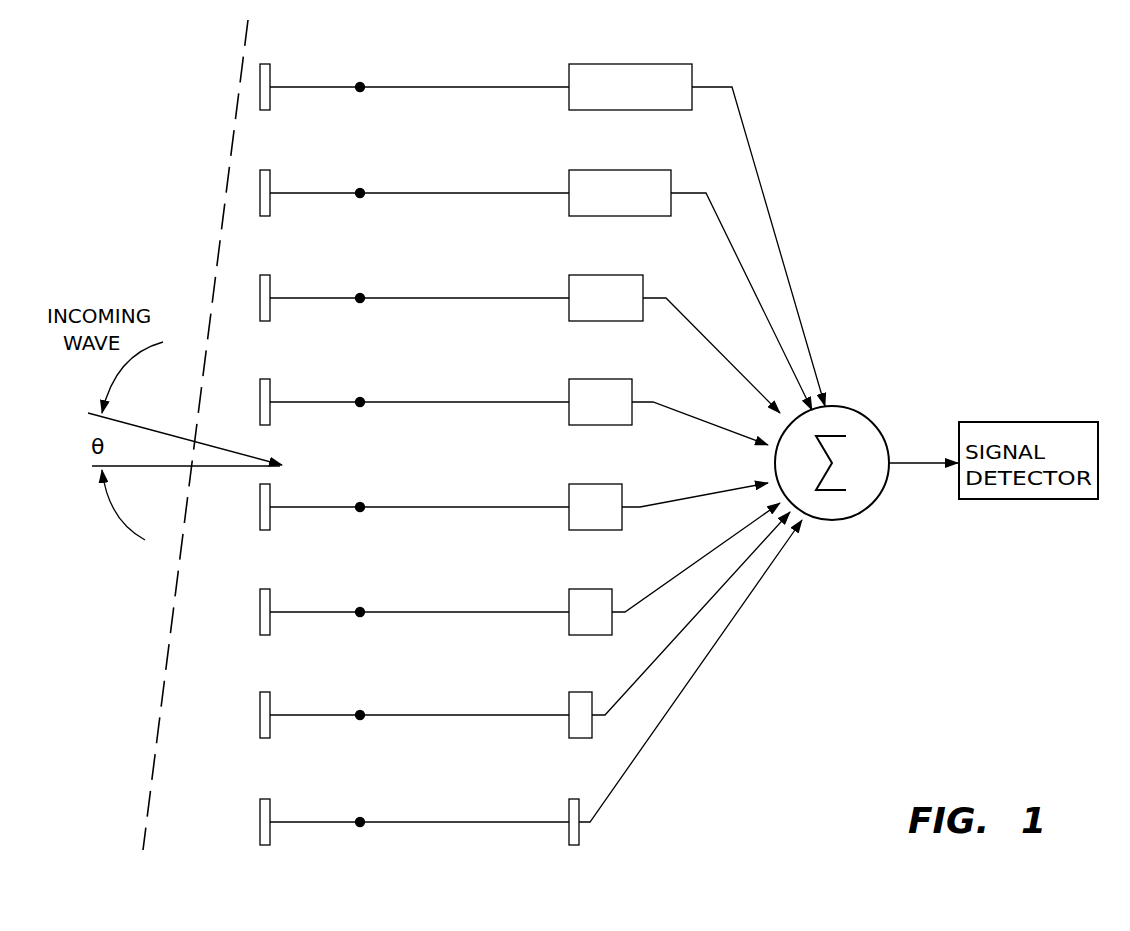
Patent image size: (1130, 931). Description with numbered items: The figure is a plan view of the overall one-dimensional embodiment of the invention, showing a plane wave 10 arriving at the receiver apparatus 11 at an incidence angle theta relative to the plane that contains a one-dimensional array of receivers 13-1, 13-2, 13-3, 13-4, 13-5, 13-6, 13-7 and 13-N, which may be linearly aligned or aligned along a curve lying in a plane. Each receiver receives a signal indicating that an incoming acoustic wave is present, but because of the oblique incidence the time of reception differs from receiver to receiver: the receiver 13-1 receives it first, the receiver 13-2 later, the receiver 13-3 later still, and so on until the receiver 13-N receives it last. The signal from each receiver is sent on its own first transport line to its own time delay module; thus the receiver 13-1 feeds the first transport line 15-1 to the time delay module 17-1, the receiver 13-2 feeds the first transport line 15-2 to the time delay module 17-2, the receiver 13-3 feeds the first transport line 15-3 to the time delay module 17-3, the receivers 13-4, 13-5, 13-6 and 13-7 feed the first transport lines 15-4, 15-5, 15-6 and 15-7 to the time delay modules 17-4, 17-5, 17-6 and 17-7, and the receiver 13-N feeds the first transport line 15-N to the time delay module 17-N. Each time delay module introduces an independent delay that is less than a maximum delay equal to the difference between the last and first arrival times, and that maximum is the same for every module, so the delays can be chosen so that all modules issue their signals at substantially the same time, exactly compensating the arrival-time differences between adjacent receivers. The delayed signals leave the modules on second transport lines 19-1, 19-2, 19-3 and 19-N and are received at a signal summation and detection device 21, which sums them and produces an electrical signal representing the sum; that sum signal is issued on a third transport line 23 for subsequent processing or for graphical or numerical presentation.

The plane wave 10 is at (158, 433).
The receiver apparatus 11 is at (162, 127).
The receiver 13-1 is at (268, 101).
The receiver 13-2 is at (268, 207).
The receiver 13-3 is at (268, 312).
The receiver 13-4 is at (268, 416).
The receiver 13-5 is at (268, 521).
The receiver 13-6 is at (268, 626).
The receiver 13-7 is at (268, 729).
The receiver 13-N is at (268, 836).
The first transport line 15-1 is at (372, 88).
The first transport line 15-2 is at (372, 194).
The first transport line 15-3 is at (372, 299).
The first transport line 15-4 is at (372, 403).
The first transport line 15-5 is at (372, 508).
The first transport line 15-6 is at (372, 613).
The first transport line 15-7 is at (372, 716).
The first transport line 15-N is at (372, 823).
The time delay module 17-1 is at (569, 102).
The time delay module 17-2 is at (569, 208).
The time delay module 17-3 is at (569, 313).
The time delay module 17-4 is at (569, 417).
The time delay module 17-5 is at (569, 522).
The time delay module 17-6 is at (569, 627).
The time delay module 17-7 is at (569, 730).
The time delay module 17-N is at (569, 837).
The second transport line 19-1 is at (758, 167).
The second transport line 19-2 is at (735, 248).
The second transport line 19-3 is at (710, 340).
The second transport line 19-N is at (660, 722).
The signal summation and detection device 21 is at (841, 510).
The third transport line 23 is at (923, 463).